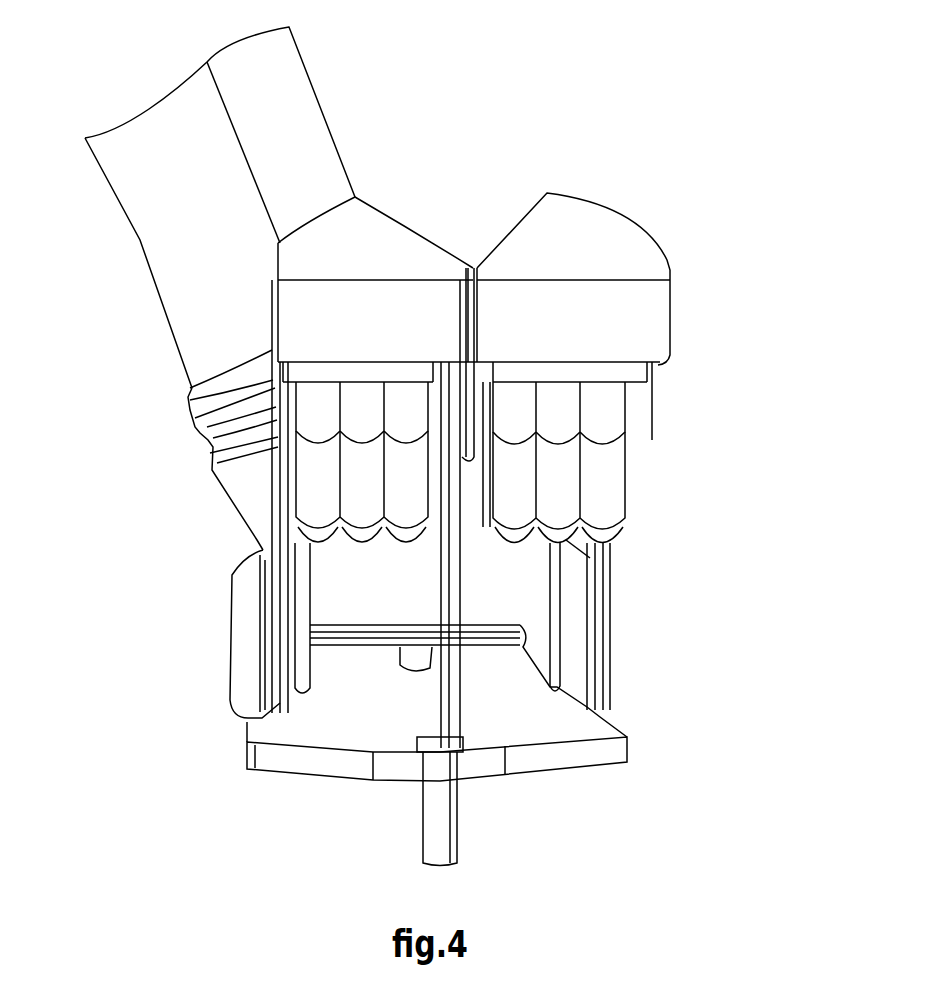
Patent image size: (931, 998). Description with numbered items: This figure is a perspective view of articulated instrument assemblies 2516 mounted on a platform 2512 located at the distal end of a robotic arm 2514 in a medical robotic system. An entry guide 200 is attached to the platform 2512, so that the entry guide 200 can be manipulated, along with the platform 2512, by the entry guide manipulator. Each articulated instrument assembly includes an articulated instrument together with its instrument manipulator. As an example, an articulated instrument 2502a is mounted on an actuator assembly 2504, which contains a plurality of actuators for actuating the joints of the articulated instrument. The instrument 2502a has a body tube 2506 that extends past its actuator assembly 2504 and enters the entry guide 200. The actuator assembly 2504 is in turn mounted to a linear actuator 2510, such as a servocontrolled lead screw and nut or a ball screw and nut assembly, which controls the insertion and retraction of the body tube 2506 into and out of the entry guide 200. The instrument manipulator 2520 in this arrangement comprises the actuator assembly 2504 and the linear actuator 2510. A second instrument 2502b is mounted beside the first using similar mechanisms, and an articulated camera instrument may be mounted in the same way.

The entry guide 200 is at (443, 840).
The articulated instrument 2502a is at (593, 233).
The second instrument 2502b is at (375, 212).
The actuator assembly 2504 is at (653, 360).
The body tube 2506 is at (470, 580).
The linear actuator 2510 is at (630, 583).
The platform 2512 is at (627, 733).
The robotic arm 2514 is at (287, 98).
The articulated instrument assemblies 2516 is at (200, 549).
The instrument manipulator 2520 is at (727, 360).